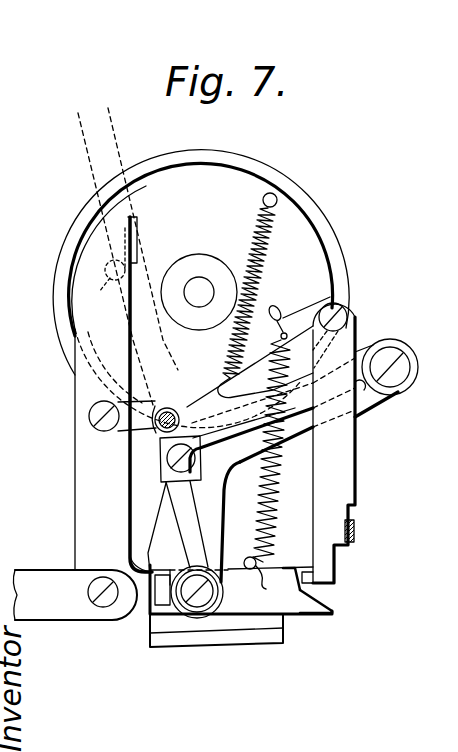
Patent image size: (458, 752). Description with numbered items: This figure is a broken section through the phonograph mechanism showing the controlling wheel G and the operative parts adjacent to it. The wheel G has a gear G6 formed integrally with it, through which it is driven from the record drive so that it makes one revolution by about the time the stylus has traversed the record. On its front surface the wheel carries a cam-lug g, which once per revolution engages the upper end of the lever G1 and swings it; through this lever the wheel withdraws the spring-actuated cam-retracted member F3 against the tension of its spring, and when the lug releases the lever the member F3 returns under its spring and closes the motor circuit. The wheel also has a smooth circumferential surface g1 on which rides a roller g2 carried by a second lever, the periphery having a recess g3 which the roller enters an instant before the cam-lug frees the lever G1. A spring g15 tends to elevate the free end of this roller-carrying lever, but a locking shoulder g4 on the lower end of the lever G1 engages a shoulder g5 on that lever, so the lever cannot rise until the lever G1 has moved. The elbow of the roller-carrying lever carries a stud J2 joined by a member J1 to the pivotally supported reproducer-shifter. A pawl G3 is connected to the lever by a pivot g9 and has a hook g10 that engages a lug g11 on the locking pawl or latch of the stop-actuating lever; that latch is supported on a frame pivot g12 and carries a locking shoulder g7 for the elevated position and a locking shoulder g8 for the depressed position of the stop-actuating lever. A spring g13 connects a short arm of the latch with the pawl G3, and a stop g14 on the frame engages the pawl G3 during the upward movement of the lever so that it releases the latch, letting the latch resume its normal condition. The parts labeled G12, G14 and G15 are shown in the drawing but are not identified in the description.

The wheel G is at (330, 241).
The smooth circumferential surface g1 is at (347, 272).
The gear G6 is at (200, 290).
The cam-lug g is at (126, 340).
The roller g2 is at (182, 405).
The recess g3 is at (153, 432).
The lever G1 is at (88, 400).
The stud J2 is at (158, 457).
The member J1 is at (162, 478).
The shoulder g5 is at (146, 553).
The spring g15 is at (262, 280).
The pivot g12 is at (357, 309).
The bracket body G14 is at (355, 455).
The locking shoulder g7 is at (352, 510).
The pad G15 is at (357, 530).
The locking shoulder g8 is at (341, 549).
The lug g11 is at (304, 572).
The spring g13 is at (296, 491).
The stop g14 is at (248, 572).
The bracket G12 is at (213, 509).
The pawl G3 is at (284, 604).
The hook g10 is at (332, 606).
The pivot g9 is at (197, 610).
The locking shoulder g4 is at (140, 585).
The spring-actuated cam-retracted member F3 is at (75, 595).